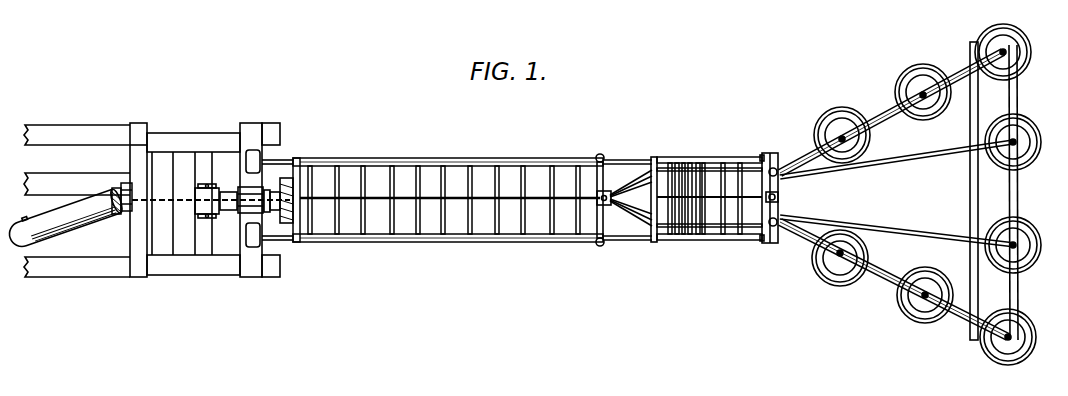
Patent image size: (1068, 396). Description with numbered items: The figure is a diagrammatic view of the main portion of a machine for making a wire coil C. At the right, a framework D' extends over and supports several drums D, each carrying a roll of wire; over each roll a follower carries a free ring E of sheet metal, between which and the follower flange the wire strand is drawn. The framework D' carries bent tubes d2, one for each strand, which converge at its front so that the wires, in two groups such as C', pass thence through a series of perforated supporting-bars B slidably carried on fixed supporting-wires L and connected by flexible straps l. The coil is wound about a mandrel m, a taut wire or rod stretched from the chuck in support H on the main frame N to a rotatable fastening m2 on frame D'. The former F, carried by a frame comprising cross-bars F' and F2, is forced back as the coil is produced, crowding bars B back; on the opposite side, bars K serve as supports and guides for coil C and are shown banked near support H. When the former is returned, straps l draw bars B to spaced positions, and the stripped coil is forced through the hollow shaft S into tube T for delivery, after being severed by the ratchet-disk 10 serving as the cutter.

The main frame N is at (243, 124).
The tube T is at (104, 193).
The ratchet-disk 10 is at (117, 183).
The hollow shaft S is at (229, 192).
The chuck-support H is at (286, 172).
The bars K is at (313, 172).
The supporting-wires L is at (506, 158).
The coil C is at (476, 162).
The group of wires C' is at (631, 238).
The former F is at (614, 182).
The cross-bar F2 is at (594, 222).
The cross-bar F' is at (660, 184).
The supporting-bars B is at (736, 240).
The flexible straps l is at (701, 240).
The mandrel m is at (707, 193).
The rotatable fastening m2 is at (780, 197).
The framework D' is at (887, 191).
The bent tubes d2 is at (884, 274).
The core or drum D is at (924, 198).
The free ring E is at (848, 282).